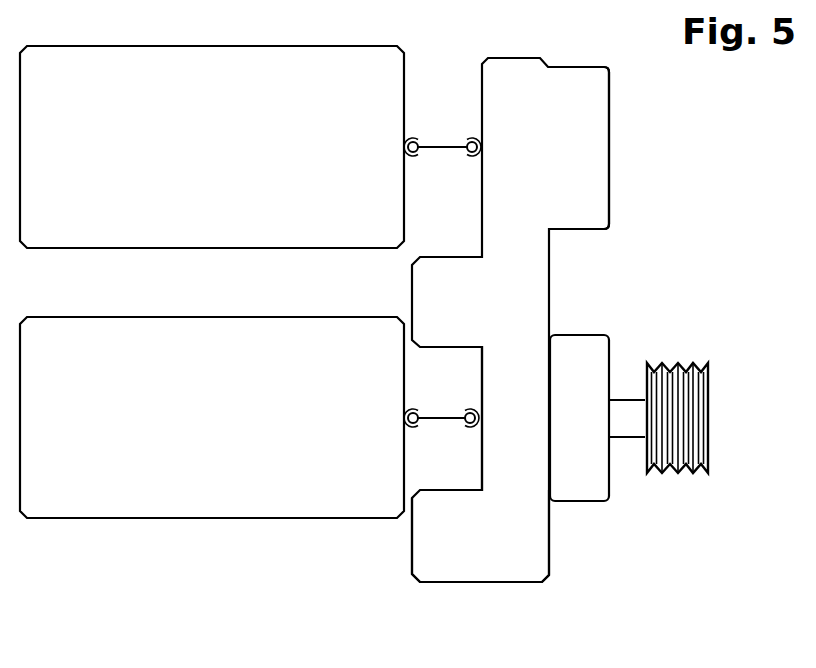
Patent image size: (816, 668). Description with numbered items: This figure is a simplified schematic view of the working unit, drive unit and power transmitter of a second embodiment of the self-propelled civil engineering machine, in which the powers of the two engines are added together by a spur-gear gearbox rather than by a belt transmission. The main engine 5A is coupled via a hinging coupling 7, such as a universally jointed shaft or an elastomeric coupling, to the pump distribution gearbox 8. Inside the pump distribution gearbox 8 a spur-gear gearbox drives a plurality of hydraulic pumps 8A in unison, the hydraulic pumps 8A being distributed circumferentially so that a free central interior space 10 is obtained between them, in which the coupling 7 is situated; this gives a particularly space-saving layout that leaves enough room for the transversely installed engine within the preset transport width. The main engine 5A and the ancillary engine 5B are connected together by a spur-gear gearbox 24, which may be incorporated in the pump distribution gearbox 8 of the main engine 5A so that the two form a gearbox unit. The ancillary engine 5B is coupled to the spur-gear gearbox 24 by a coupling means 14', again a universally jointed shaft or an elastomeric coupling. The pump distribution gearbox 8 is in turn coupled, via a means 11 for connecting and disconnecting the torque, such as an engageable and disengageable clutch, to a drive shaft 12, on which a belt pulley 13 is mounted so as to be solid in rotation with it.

The main engine 5A is at (210, 518).
The ancillary engine 5B is at (210, 248).
The hinging coupling 7 is at (441, 413).
The pump distribution gearbox 8 is at (513, 568).
The hydraulic pumps 8A is at (447, 568).
The free central interior space 10 is at (479, 374).
The means for connecting/disconnecting the torque 11 is at (578, 493).
The drive shaft 12 is at (627, 423).
The belt pulley 13 is at (697, 420).
The coupling means 14' is at (442, 116).
The spur-gear gearbox 24 is at (542, 205).